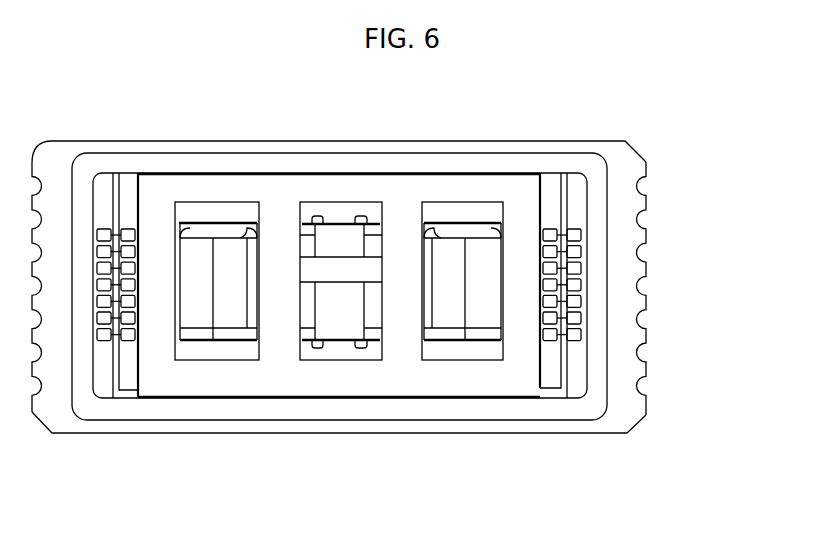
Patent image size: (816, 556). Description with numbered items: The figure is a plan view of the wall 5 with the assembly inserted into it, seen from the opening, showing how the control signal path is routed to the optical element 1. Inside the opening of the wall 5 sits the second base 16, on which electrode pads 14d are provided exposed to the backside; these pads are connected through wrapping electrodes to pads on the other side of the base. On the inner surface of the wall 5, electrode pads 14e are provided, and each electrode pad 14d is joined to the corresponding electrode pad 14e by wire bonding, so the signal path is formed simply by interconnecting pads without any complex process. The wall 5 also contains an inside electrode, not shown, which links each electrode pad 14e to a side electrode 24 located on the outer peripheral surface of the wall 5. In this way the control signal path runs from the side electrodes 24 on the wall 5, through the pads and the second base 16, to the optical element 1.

The optical element 1 is at (337, 320).
The wall 5 is at (622, 240).
The electrode pad 14d is at (127, 229).
The electrode pad 14e is at (104, 229).
The second base 16 is at (445, 378).
The side electrode 24 is at (639, 350).